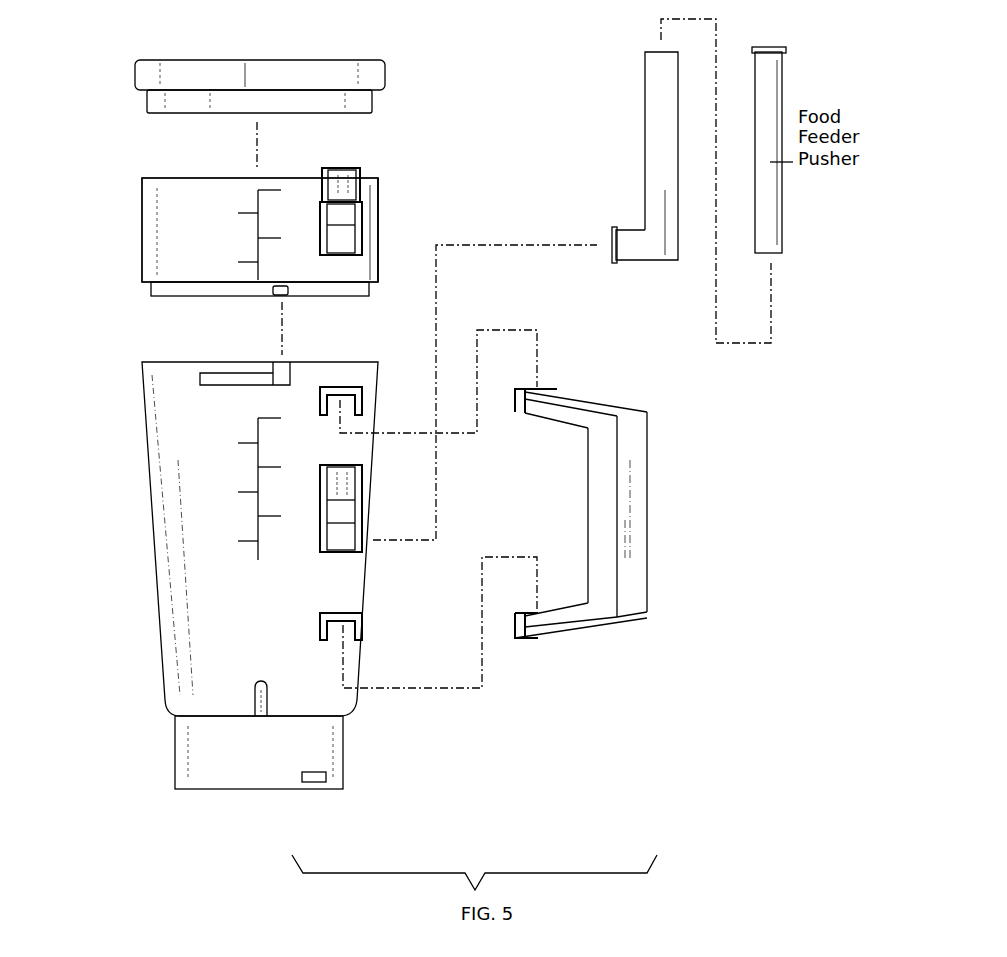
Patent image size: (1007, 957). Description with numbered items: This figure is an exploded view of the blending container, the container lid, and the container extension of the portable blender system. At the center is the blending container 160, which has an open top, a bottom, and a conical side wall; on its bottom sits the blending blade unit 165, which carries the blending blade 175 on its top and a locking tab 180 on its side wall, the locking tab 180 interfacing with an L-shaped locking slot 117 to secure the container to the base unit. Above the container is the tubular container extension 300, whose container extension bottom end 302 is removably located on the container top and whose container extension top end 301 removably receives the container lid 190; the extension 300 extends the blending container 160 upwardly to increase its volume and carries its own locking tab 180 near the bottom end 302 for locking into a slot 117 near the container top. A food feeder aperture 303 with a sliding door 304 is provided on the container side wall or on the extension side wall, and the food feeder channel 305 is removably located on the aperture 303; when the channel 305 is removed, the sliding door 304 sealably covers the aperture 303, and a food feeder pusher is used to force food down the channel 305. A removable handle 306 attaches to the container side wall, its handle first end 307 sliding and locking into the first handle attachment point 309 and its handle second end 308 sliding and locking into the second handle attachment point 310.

The container lid 190 is at (317, 68).
The tubular container extension 300 is at (132, 213).
The container extension bottom end 302 is at (190, 270).
The sliding door 304 is at (348, 177).
The container extension top end 301 is at (367, 197).
The food feeder aperture 303 is at (343, 240).
The locking tab 180 is at (274, 293).
The blending container 160 is at (173, 600).
The locking slot 117 is at (200, 383).
The first handle attachment point 309 is at (353, 392).
The second handle attachment point 310 is at (360, 632).
The blending blade unit 165 is at (333, 742).
The blending blade 175 is at (258, 702).
The food feeder channel 305 is at (655, 138).
The handle 306 is at (633, 553).
The handle first end 307 is at (537, 408).
The handle second end 308 is at (533, 625).